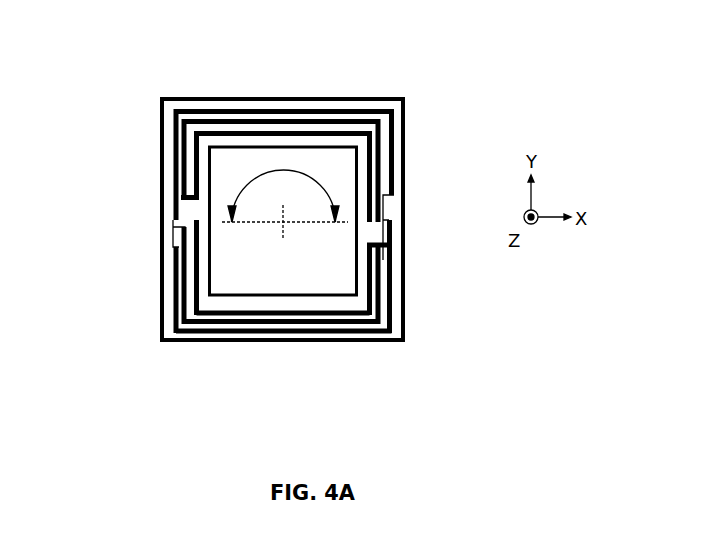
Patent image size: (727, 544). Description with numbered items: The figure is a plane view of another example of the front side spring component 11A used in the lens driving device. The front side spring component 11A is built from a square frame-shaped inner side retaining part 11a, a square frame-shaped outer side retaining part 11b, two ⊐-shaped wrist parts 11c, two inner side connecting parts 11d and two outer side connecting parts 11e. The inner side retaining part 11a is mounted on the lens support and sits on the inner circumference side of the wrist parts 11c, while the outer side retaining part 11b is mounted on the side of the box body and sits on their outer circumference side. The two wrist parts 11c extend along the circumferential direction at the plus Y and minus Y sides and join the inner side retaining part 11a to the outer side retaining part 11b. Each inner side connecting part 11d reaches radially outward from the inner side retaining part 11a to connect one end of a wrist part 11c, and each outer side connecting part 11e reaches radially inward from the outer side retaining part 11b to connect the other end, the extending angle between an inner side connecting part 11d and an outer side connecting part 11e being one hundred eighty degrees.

The front side spring component 11A is at (166, 101).
The inner side retaining part 11a is at (230, 133).
The outer side retaining part 11b is at (367, 110).
The wrist part 11c is at (183, 165).
The inner side connecting part 11d is at (178, 198).
The outer side connecting part 11e is at (176, 232).